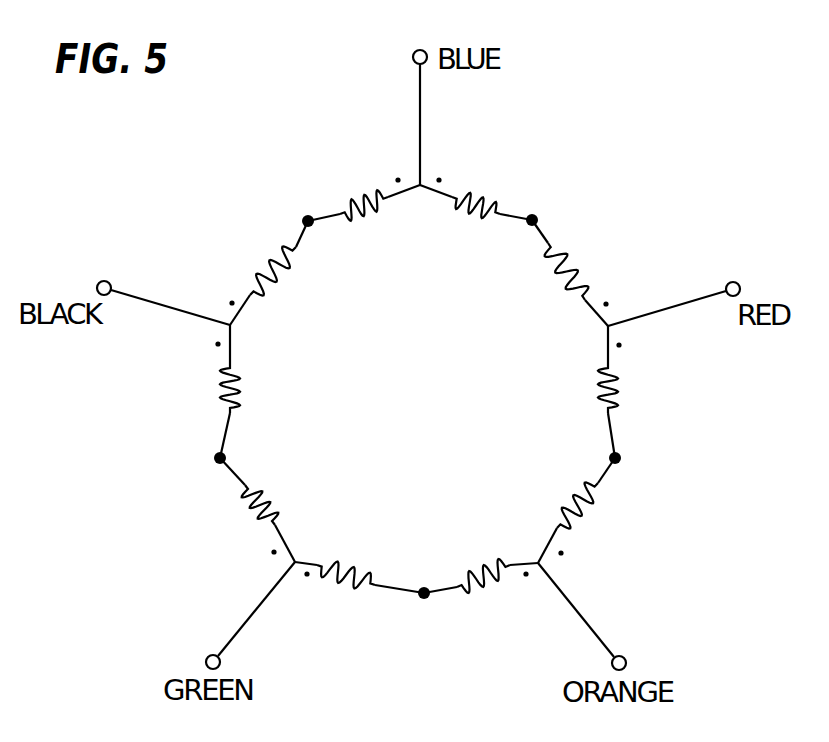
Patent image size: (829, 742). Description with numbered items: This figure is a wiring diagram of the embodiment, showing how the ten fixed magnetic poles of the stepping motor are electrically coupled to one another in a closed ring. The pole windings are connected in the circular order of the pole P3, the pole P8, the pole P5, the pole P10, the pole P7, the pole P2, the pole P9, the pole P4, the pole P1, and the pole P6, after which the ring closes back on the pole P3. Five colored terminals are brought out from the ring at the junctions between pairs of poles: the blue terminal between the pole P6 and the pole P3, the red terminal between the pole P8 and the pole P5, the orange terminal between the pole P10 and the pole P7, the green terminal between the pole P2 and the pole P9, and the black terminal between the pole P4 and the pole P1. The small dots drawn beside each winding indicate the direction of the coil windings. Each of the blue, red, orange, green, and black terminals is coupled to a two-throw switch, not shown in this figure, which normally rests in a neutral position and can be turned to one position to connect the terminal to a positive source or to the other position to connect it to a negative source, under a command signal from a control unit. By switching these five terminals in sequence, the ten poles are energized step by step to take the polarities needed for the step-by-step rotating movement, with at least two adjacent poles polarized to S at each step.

The fixed magnetic pole P1 is at (260, 273).
The fixed magnetic pole P2 is at (359, 599).
The fixed magnetic pole P3 is at (476, 184).
The fixed magnetic pole P4 is at (203, 391).
The fixed magnetic pole P5 is at (638, 392).
The fixed magnetic pole P6 is at (364, 185).
The fixed magnetic pole P7 is at (481, 597).
The fixed magnetic pole P8 is at (580, 273).
The fixed magnetic pole P9 is at (252, 510).
The fixed magnetic pole P10 is at (594, 510).